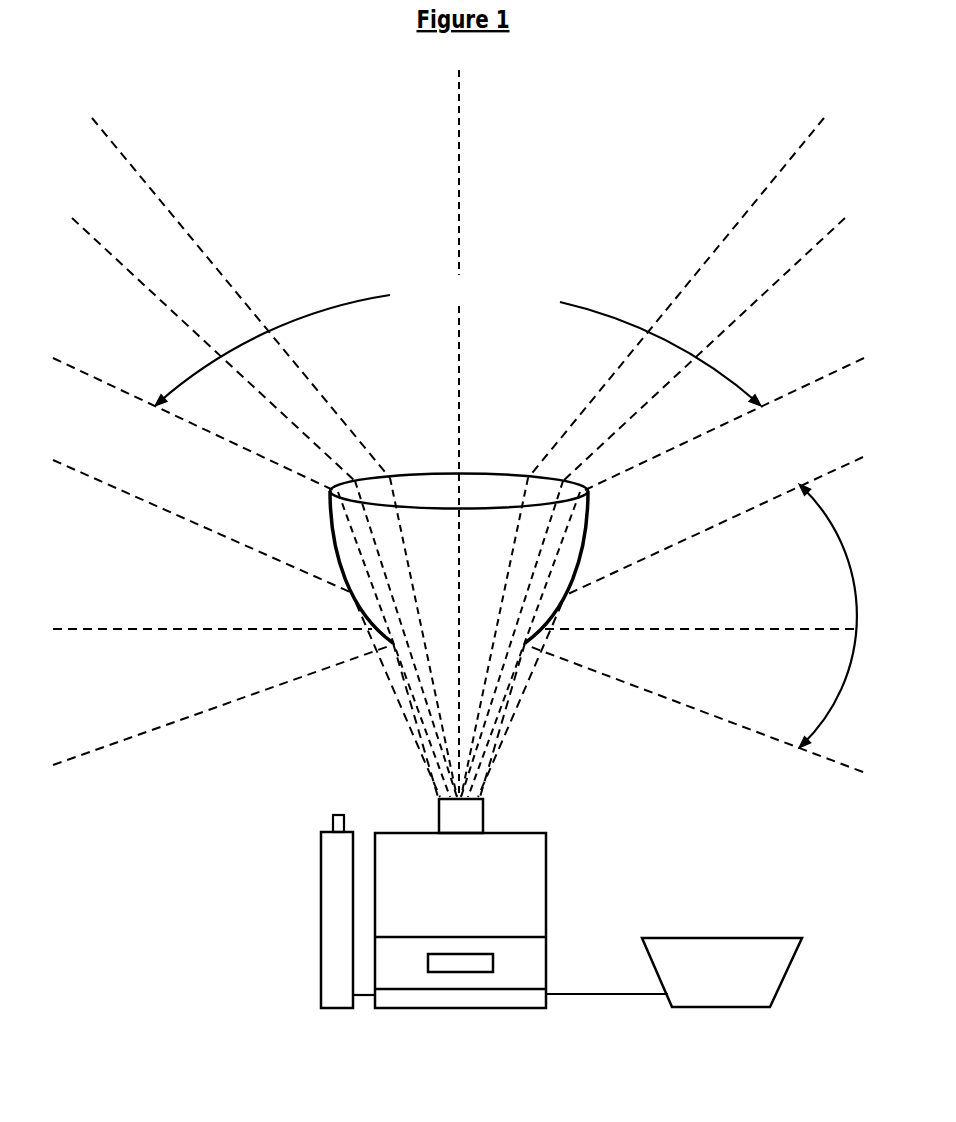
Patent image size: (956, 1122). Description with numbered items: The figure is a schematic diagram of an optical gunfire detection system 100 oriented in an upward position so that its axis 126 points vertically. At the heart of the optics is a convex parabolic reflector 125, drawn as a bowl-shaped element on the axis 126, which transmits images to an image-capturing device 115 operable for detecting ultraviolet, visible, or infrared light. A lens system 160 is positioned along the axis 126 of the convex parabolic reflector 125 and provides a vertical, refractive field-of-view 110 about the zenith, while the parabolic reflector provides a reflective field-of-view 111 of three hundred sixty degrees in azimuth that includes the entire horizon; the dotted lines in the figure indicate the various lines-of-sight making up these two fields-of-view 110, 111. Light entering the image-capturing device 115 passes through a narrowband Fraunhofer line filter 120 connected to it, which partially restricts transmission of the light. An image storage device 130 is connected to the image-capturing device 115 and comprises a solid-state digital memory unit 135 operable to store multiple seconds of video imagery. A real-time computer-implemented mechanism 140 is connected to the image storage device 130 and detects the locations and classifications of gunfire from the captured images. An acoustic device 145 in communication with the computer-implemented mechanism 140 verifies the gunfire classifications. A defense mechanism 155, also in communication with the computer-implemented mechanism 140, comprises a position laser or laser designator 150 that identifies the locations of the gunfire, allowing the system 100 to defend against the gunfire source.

The optical gunfire detection system 100 is at (184, 850).
The refractive field-of-view 110 is at (475, 457).
The reflective field-of-view 111 is at (468, 627).
The image-capturing device 115 is at (547, 876).
The narrowband Fraunhofer line filter 120 is at (484, 821).
The convex parabolic reflector 125 is at (331, 518).
The axis 126 is at (457, 114).
The image storage device 130 is at (547, 977).
The solid-state digital memory unit 135 is at (494, 962).
The real-time computer-implemented mechanism 140 is at (540, 1010).
The acoustic device 145 is at (786, 975).
The laser designator 150 is at (333, 818).
The defense mechanism 155 is at (321, 908).
The lens system 160 is at (492, 474).